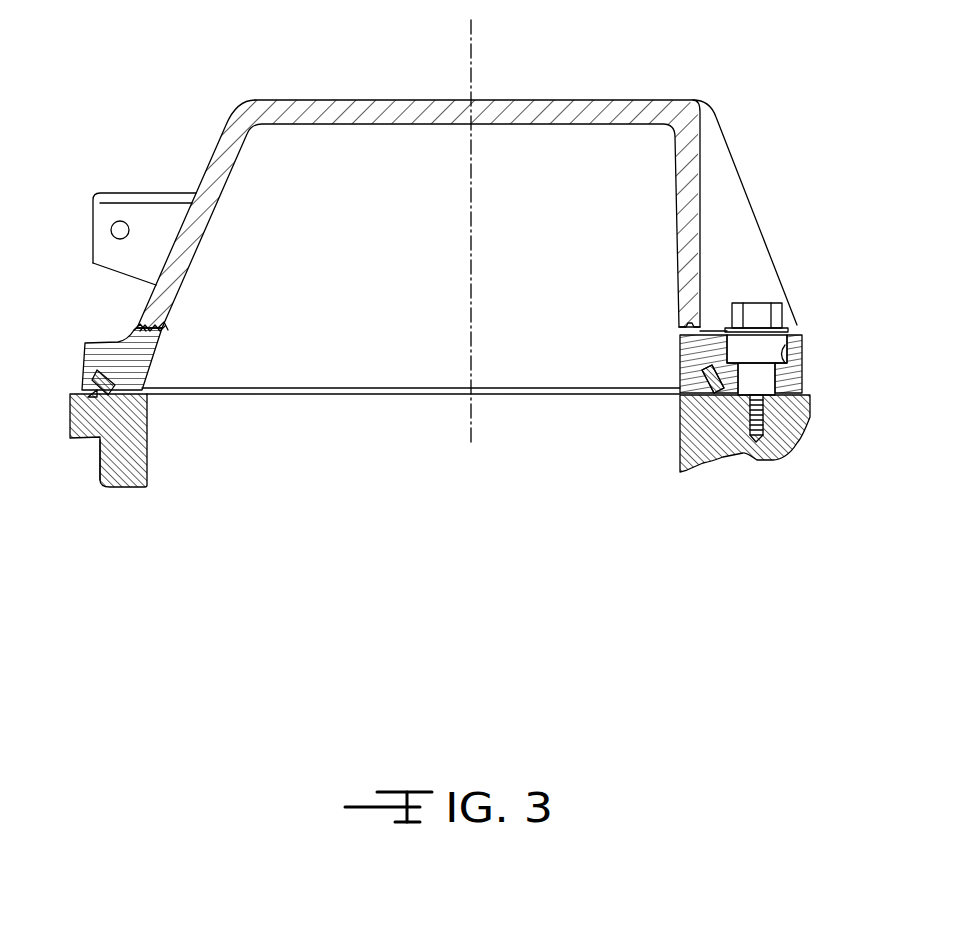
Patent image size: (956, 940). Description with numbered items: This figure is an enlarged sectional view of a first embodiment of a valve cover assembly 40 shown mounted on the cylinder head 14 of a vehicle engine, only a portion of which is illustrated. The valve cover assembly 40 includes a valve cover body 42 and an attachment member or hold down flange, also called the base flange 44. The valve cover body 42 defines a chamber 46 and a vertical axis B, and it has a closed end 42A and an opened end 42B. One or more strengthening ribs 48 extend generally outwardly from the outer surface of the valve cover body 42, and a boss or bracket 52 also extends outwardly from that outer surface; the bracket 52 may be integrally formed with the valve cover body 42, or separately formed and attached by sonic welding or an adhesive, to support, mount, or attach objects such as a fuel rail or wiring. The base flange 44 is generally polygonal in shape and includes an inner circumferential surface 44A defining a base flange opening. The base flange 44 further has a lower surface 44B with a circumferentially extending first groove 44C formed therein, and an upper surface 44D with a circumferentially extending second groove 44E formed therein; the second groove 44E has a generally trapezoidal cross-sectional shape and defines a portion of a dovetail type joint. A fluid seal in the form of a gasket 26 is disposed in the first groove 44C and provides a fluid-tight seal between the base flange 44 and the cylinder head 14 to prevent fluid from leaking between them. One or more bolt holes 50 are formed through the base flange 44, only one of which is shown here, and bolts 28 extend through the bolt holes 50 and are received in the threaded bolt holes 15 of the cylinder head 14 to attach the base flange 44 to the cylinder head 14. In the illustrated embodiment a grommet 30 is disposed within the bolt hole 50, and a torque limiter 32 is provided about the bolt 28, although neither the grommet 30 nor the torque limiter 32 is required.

The axis B is at (472, 52).
The cover assembly 40 is at (296, 48).
The cover 42 is at (418, 178).
The top wall of cover 42A is at (427, 110).
The bottom opening of cover 42B is at (447, 378).
The interior surface 46 is at (375, 147).
The skirt 48 is at (725, 177).
The bracket 52 is at (110, 213).
The gasket 44 is at (150, 377).
The gasket body 44A is at (152, 362).
The gasket pin 44B is at (147, 402).
The gasket channel 44C is at (115, 372).
The gasket lip 44D is at (168, 330).
The gasket lip 44E is at (150, 330).
The frame member 14 is at (139, 465).
The frame flange 26 is at (100, 440).
The frame member 15 is at (768, 427).
The bolt 28 is at (760, 313).
The mount 30 is at (680, 347).
The spacer 32 is at (797, 325).
The slot 50 is at (788, 372).